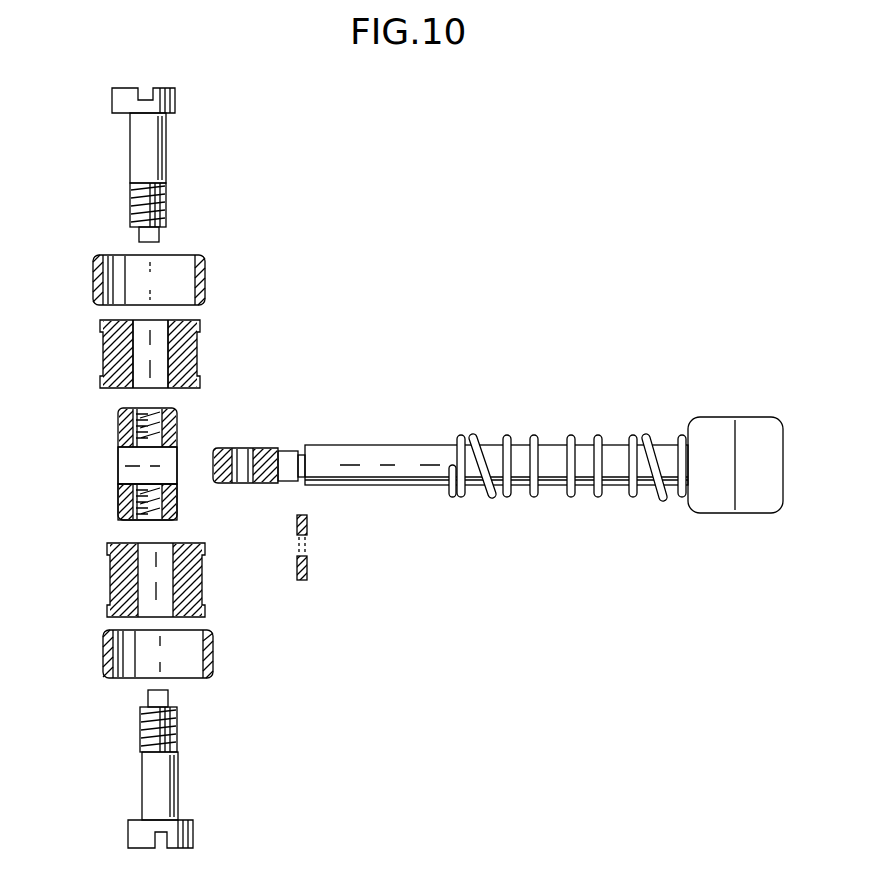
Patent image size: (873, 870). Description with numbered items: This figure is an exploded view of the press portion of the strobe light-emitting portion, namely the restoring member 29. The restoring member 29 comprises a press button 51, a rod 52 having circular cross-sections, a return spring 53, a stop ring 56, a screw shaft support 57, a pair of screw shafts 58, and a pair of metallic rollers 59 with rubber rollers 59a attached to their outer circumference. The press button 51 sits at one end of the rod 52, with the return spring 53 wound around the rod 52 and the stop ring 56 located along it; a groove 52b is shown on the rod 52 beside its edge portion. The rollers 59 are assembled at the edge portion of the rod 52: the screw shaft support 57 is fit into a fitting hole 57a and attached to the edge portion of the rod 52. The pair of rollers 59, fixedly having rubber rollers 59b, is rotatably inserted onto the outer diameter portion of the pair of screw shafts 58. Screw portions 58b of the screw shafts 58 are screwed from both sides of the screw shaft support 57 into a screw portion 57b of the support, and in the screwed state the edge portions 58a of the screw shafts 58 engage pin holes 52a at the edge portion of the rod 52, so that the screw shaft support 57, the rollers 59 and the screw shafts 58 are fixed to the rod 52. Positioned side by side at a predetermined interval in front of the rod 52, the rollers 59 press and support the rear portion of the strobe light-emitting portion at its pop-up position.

The restoring member 29 is at (563, 190).
The press button 51 is at (750, 437).
The rod 52 is at (400, 450).
The pin holes 52a is at (245, 452).
The shaft groove 52b is at (302, 448).
The return spring 53 is at (592, 440).
The stop ring 56 is at (307, 568).
The screw shaft support 57 is at (124, 430).
The fitting hole 57a is at (125, 480).
The screw portion 57b is at (145, 468).
The screw shafts 58 is at (136, 152).
The edge portions 58a is at (140, 235).
The screw portions 58b is at (166, 205).
The metallic rollers 59 is at (108, 358).
The rubber rollers 59a is at (172, 368).
The rubber rollers 59b is at (96, 283).